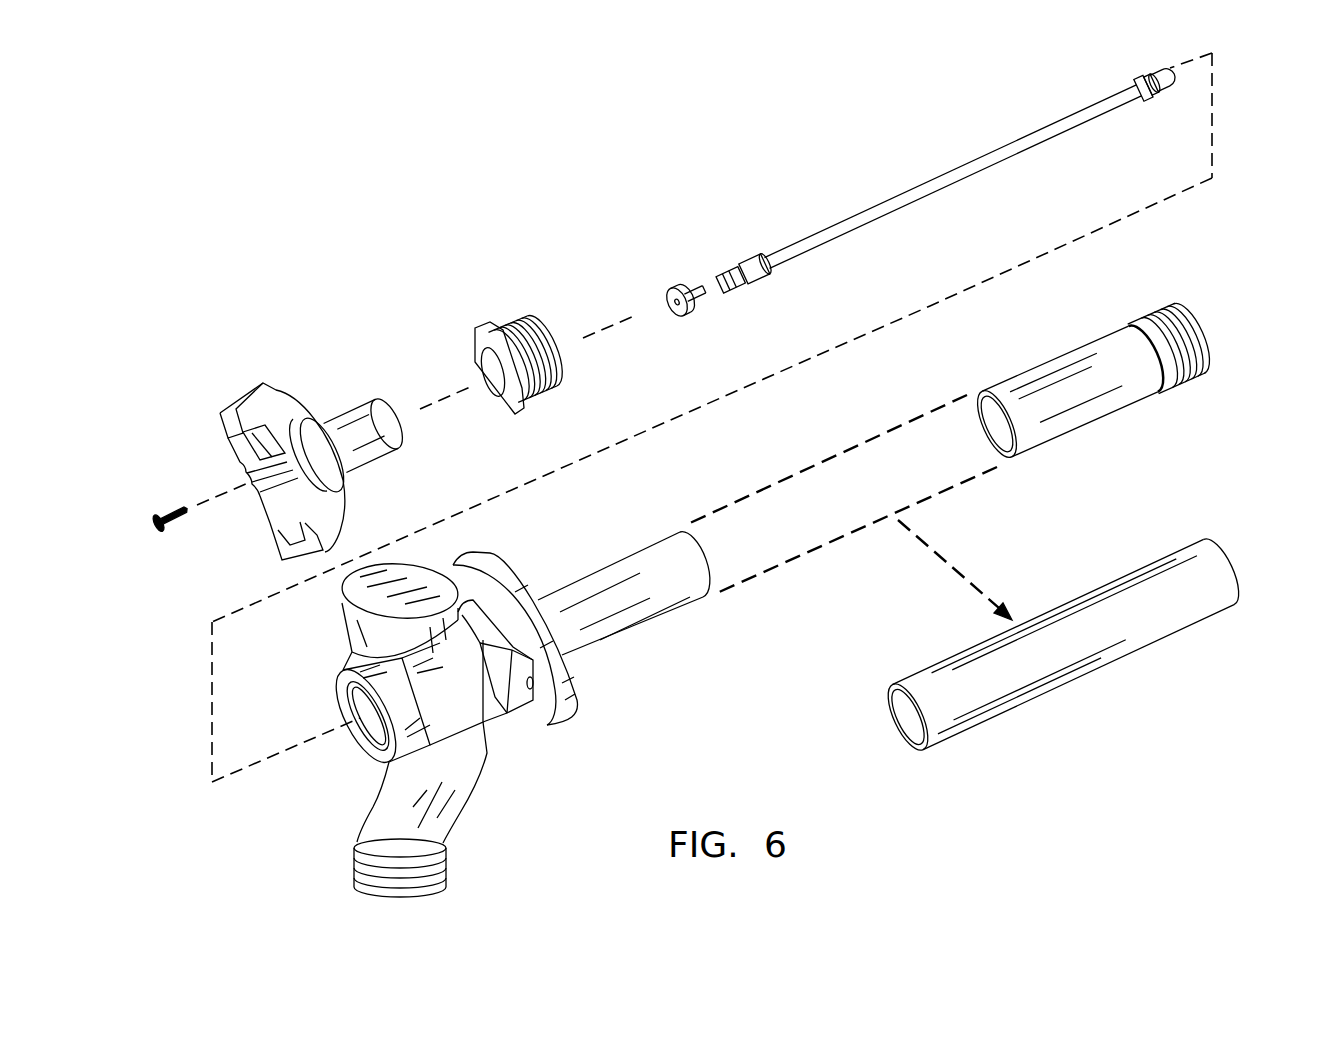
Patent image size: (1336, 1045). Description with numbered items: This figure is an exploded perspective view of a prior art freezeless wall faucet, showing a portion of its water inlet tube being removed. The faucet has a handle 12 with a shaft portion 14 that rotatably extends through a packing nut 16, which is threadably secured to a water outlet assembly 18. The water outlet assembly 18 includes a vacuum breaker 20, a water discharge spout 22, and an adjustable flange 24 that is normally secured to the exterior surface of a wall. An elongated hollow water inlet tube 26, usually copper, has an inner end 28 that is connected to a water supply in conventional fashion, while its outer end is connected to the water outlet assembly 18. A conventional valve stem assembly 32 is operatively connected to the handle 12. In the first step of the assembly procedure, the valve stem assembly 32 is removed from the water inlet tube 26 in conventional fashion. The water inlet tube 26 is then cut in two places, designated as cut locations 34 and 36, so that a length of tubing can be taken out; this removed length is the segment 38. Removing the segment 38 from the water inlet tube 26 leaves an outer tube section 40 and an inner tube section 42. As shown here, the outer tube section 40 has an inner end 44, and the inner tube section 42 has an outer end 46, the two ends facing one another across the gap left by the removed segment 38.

The handle 12 is at (298, 392).
The shaft portion 14 is at (362, 423).
The packing nut 16 is at (508, 330).
The water outlet assembly 18 is at (454, 701).
The vacuum breaker 20 is at (402, 572).
The water discharge spout 22 is at (407, 843).
The adjustable flange 24 is at (560, 693).
The water inlet tube 26 is at (675, 584).
The inner end 28 is at (1129, 394).
The valve stem assembly 32 is at (833, 200).
The cut location 34 is at (925, 752).
The cut location 36 is at (1237, 573).
The removed segment of water inlet tube 38 is at (1099, 649).
The outer tube section 40 is at (643, 603).
The inner tube section 42 is at (1133, 382).
The inner end 44 is at (712, 560).
The outer end 46 is at (1005, 460).